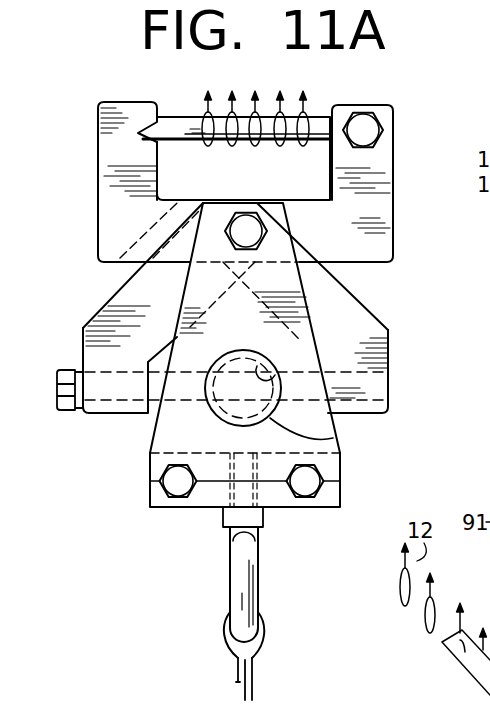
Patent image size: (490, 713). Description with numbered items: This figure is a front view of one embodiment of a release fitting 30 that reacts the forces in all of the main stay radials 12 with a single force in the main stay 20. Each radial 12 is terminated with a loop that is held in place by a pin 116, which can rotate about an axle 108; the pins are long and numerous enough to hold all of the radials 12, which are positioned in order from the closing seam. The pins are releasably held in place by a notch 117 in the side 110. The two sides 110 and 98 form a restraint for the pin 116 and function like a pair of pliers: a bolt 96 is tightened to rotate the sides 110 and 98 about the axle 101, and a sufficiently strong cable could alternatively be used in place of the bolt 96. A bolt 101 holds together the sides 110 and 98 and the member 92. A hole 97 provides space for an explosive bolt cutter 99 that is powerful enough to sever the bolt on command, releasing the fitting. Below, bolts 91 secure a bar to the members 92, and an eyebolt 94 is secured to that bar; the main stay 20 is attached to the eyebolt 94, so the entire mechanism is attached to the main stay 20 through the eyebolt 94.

The release fitting 30 is at (86, 93).
The side 110 is at (97, 176).
The side 98 is at (388, 209).
The notch 117 is at (165, 131).
The pin 116 is at (310, 123).
The main stay radial 12 is at (210, 107).
The axle 108 is at (366, 128).
The bolt 101 is at (262, 240).
The explosive bolt cutter 99 is at (280, 378).
The hole 97 is at (333, 438).
The bolt 96 is at (67, 400).
The member 92 is at (341, 457).
The bolts 91 is at (172, 486).
The eye bolt 94 is at (237, 578).
The main stay 20 is at (250, 667).